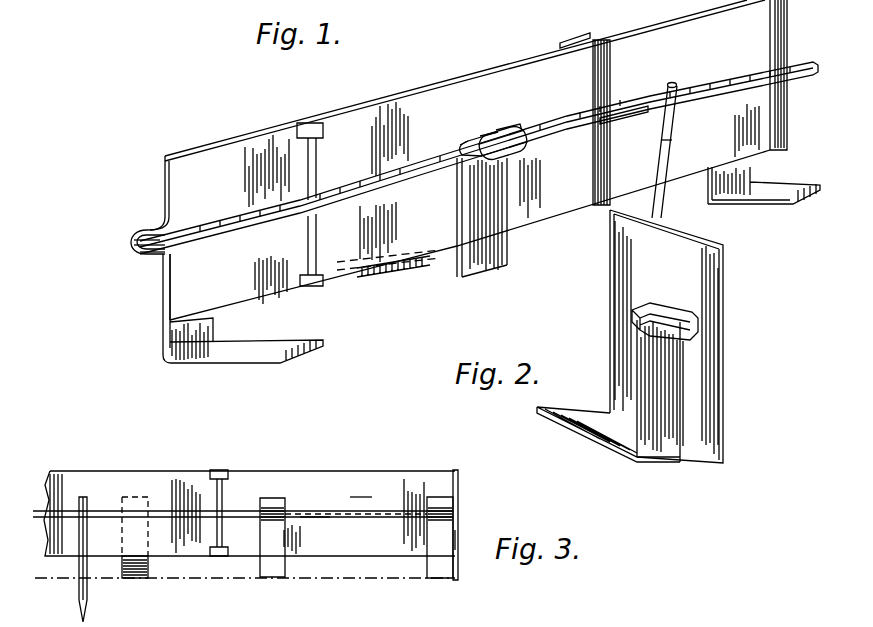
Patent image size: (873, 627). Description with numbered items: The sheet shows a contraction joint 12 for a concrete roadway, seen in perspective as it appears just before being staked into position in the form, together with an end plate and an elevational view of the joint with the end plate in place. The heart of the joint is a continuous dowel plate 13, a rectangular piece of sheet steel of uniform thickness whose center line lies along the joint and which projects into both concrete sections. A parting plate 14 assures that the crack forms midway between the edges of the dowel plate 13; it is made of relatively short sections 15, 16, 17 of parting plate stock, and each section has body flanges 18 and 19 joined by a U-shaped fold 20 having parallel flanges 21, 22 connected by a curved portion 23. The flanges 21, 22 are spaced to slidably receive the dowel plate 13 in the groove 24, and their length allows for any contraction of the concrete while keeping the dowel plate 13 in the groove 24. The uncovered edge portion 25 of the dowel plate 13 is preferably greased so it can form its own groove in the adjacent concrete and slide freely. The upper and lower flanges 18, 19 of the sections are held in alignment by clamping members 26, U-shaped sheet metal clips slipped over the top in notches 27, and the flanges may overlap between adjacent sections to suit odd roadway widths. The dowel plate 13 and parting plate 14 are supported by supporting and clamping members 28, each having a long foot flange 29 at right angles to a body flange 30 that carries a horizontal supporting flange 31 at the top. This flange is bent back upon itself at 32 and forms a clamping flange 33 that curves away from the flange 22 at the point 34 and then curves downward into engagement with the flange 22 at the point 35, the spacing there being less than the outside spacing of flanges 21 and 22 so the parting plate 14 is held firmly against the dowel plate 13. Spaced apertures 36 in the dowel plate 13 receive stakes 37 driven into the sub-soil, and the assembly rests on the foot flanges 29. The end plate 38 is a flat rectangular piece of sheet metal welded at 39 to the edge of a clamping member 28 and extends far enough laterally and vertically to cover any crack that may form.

In FIG. 1, the contraction joint 12 is at (406, 110).
In FIG. 3, the contraction joint 12 is at (339, 468).
In FIG. 1, the dowel plate 13 is at (162, 248).
In FIG. 3, the dowel plate 13 is at (164, 510).
In FIG. 1, the parting plate 14 is at (168, 181).
In FIG. 3, the parting plate 14 is at (410, 485).
In FIG. 1, the parting plate section 15 is at (228, 169).
In FIG. 1, the parting plate section 16 is at (465, 90).
In FIG. 1, the parting plate section 17 is at (643, 53).
In FIG. 1, the body flange 18 is at (266, 142).
In FIG. 3, the body flange 18 is at (351, 488).
In FIG. 1, the body flange 19 is at (278, 283).
In FIG. 3, the body flange 19 is at (356, 553).
In FIG. 1, the U-shaped fold 20 is at (137, 232).
In FIG. 3, the U-shaped fold 20 is at (318, 518).
In FIG. 1, the parallel flange 21 is at (148, 247).
In FIG. 1, the parallel flange 22 is at (152, 228).
In FIG. 1, the curved portion 23 is at (140, 242).
In FIG. 1, the groove 24 is at (153, 255).
In FIG. 1, the uncovered edge portion 25 is at (245, 231).
In FIG. 3, the uncovered edge portion 25 is at (57, 520).
In FIG. 1, the clamping member 26 is at (311, 122).
In FIG. 3, the clamping member 26 is at (219, 470).
In FIG. 1, the notch 27 is at (318, 124).
In FIG. 3, the notch 27 is at (225, 478).
In FIG. 1, the supporting and clamping member 28 is at (165, 340).
In FIG. 2, the supporting and clamping member 28 is at (636, 357).
In FIG. 3, the supporting and clamping member 28 is at (423, 544).
In FIG. 1, the foot flange 29 is at (330, 347).
In FIG. 2, the foot flange 29 is at (542, 394).
In FIG. 3, the foot flange 29 is at (140, 578).
In FIG. 1, the body flange 30 is at (505, 218).
In FIG. 3, the body flange 30 is at (277, 520).
In FIG. 1, the horizontal supporting flange 31 is at (480, 168).
In FIG. 1, the bent-back portion 32 is at (528, 152).
In FIG. 2, the bent-back portion 32 is at (695, 327).
In FIG. 1, the clamping flange 33 is at (508, 134).
In FIG. 1, the point of curvature 34 is at (496, 134).
In FIG. 1, the point of engagement 35 is at (468, 140).
In FIG. 1, the aperture 36 is at (678, 90).
In FIG. 1, the stake 37 is at (672, 154).
In FIG. 3, the stake 37 is at (85, 497).
In FIG. 2, the end plate 38 is at (712, 368).
In FIG. 3, the end plate 38 is at (457, 483).
In FIG. 2, the weld 39 is at (680, 380).
In FIG. 3, the weld 39 is at (460, 541).